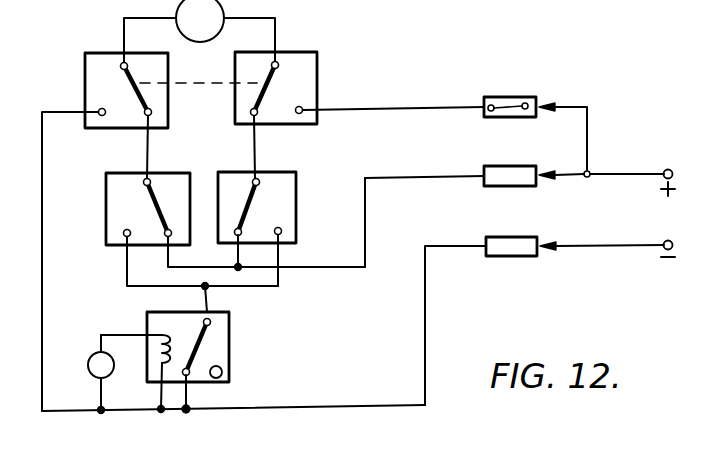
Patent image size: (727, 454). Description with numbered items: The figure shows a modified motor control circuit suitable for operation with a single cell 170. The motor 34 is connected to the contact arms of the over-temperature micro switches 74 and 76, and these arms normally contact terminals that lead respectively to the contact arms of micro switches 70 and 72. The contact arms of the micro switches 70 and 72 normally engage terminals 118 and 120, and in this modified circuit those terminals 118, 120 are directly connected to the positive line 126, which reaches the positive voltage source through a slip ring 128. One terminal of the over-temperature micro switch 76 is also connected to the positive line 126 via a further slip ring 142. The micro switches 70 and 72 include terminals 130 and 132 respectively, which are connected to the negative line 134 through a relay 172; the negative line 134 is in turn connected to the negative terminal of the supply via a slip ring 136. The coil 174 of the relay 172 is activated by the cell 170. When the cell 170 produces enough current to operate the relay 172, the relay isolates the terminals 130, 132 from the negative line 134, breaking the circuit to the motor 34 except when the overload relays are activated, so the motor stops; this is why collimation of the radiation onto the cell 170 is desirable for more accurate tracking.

The motor 34 is at (222, 30).
The over-temperature micro switch 74 is at (95, 67).
The over-temperature micro switch 76 is at (300, 72).
The micro switch 70 is at (126, 228).
The micro switch 72 is at (271, 199).
The terminal 118 is at (166, 240).
The terminal 120 is at (236, 229).
The terminal 130 is at (124, 237).
The terminal 132 is at (283, 232).
The positive line 126 is at (346, 270).
The slip ring 128 is at (497, 166).
The slip ring 142 is at (497, 97).
The slip ring 136 is at (514, 247).
The negative line 134 is at (346, 405).
The cell 170 is at (95, 357).
The relay 172 is at (190, 343).
The coil 174 is at (156, 340).